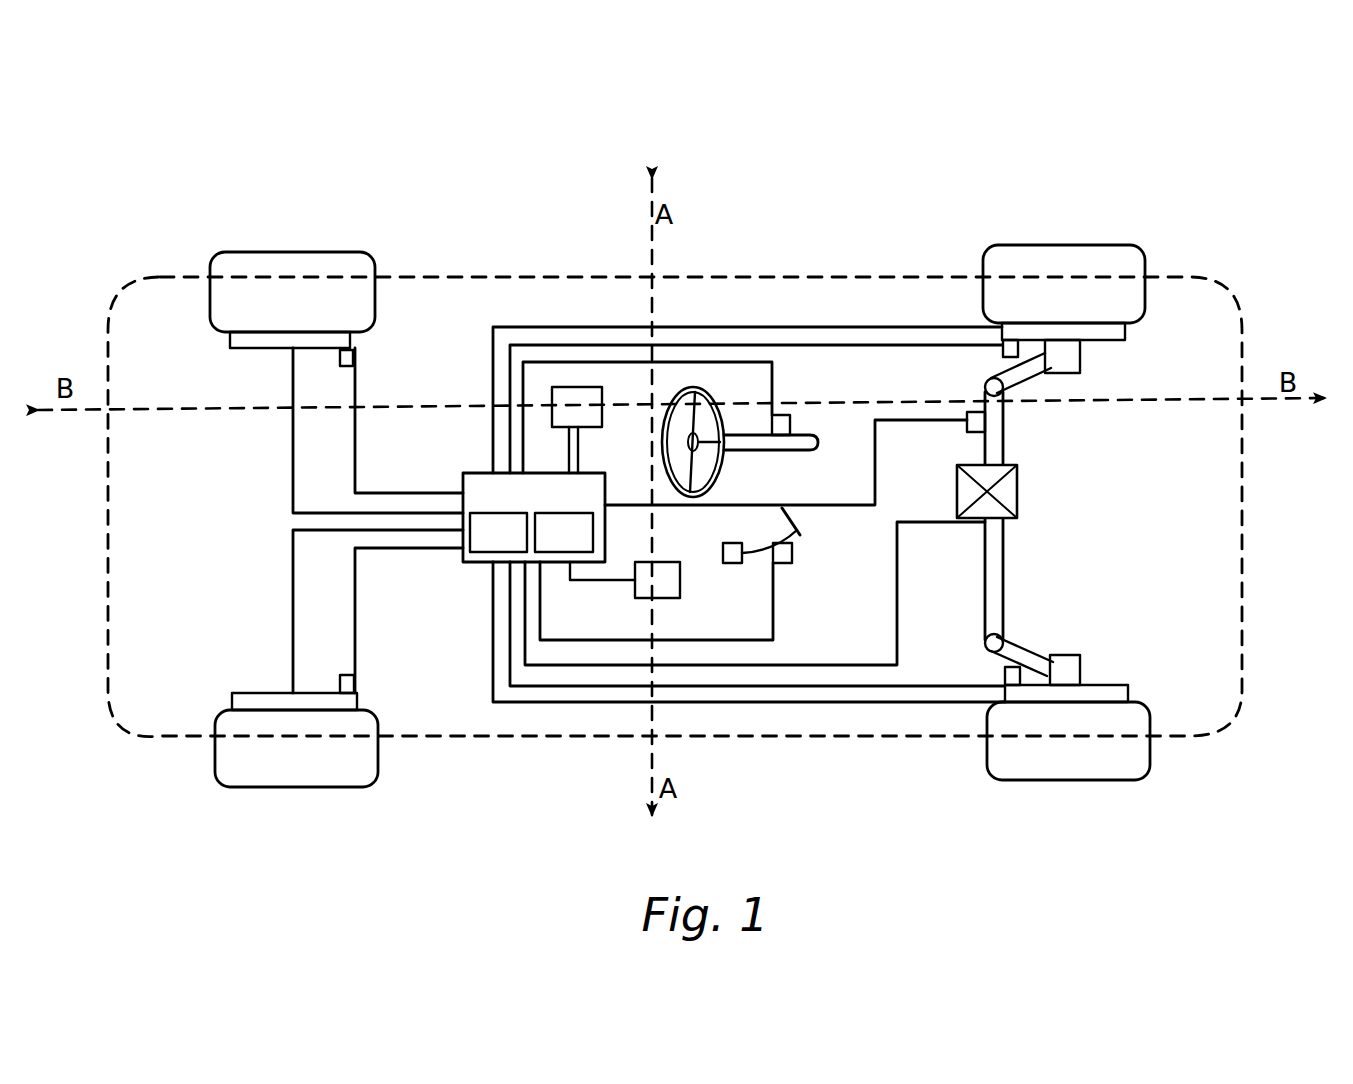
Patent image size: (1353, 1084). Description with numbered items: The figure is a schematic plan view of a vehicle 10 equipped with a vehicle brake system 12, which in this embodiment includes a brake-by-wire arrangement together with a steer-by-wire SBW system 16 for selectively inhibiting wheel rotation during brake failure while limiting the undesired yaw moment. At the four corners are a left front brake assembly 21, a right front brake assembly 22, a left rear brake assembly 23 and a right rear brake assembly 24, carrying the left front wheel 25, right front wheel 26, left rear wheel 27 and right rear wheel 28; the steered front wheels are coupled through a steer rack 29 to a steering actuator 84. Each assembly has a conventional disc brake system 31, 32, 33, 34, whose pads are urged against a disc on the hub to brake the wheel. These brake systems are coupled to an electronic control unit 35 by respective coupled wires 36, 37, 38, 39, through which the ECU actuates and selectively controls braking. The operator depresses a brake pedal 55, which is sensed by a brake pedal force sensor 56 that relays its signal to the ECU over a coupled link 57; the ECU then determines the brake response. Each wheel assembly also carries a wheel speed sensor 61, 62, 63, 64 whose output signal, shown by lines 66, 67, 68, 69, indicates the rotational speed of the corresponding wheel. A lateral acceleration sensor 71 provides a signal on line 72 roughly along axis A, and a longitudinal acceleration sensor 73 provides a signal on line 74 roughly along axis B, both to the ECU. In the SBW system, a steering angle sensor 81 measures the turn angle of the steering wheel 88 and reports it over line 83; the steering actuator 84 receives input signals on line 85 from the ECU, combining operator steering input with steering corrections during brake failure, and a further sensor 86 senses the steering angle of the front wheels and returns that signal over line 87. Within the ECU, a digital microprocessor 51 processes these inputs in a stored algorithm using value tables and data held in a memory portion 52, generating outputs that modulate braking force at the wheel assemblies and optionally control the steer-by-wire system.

The vehicle 10 is at (931, 156).
The vehicle brake system 12 is at (450, 318).
The SBW system 16 is at (1044, 508).
The left front brake assembly 21 is at (1170, 326).
The right front brake assembly 22 is at (1170, 683).
The left rear brake assembly 23 is at (183, 330).
The right rear brake assembly 24 is at (190, 705).
The left front wheel 25 is at (1028, 250).
The right front wheel 26 is at (1050, 760).
The left rear wheel 27 is at (248, 262).
The right rear wheel 28 is at (268, 780).
The steer rack 29 is at (1010, 566).
The left front disc brake system 31 is at (1126, 335).
The right front disc brake system 32 is at (1128, 685).
The left rear disc brake system 33 is at (226, 349).
The right rear disc brake system 34 is at (232, 697).
The electronic control unit 35 is at (519, 561).
The coupled wire 36 is at (927, 327).
The coupled wire 37 is at (822, 705).
The coupled wire 38 is at (292, 460).
The coupled wire 39 is at (292, 567).
The digital microprocessor 51 is at (498, 532).
The memory portion 52 is at (564, 532).
The brake pedal 55 is at (800, 533).
The brake pedal force sensor 56 is at (787, 565).
The coupled link 57 is at (740, 640).
The wheel speed sensor 61 is at (1000, 350).
The wheel speed sensor 62 is at (1003, 667).
The wheel speed sensor 63 is at (353, 358).
The wheel speed sensor 64 is at (354, 685).
The output signal line 66 is at (857, 345).
The output signal line 67 is at (755, 704).
The output signal line 68 is at (357, 445).
The output signal line 69 is at (357, 575).
The lateral acceleration sensor 71 is at (632, 598).
The output signal line 72 is at (607, 579).
The longitudinal acceleration sensor 73 is at (569, 445).
The output signal line 74 is at (580, 457).
The steering angle sensor 81 is at (791, 425).
The output signal line 83 is at (752, 362).
The steering actuator 84 is at (1020, 486).
The input signal line 85 is at (888, 700).
The steering angle sensor 86 is at (967, 427).
The signal line 87 is at (818, 502).
The steering wheel 88 is at (704, 388).